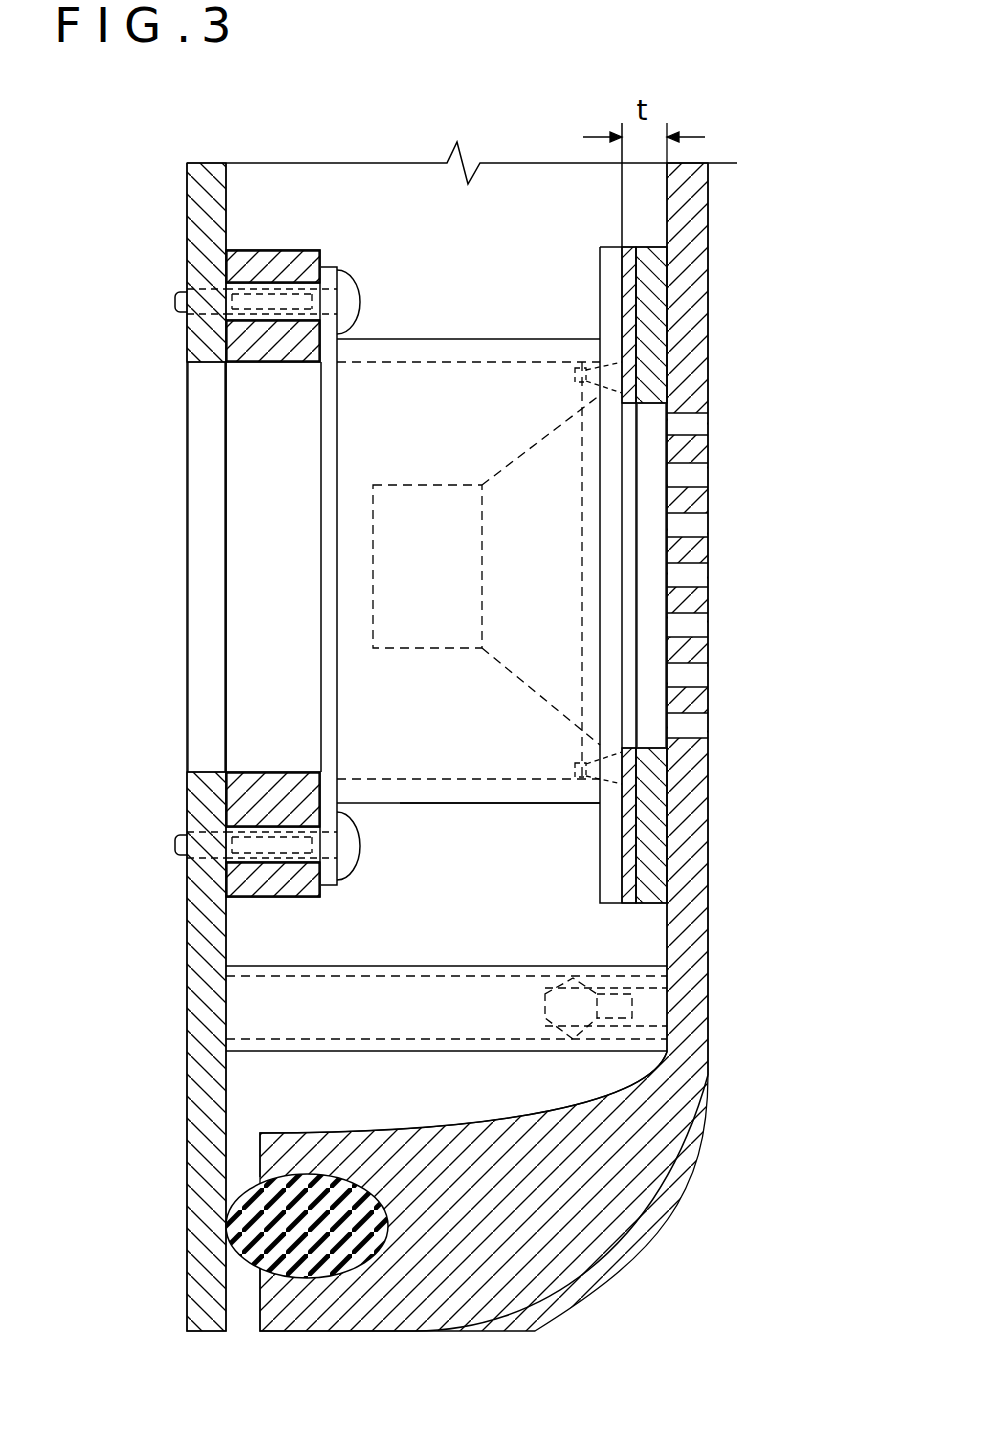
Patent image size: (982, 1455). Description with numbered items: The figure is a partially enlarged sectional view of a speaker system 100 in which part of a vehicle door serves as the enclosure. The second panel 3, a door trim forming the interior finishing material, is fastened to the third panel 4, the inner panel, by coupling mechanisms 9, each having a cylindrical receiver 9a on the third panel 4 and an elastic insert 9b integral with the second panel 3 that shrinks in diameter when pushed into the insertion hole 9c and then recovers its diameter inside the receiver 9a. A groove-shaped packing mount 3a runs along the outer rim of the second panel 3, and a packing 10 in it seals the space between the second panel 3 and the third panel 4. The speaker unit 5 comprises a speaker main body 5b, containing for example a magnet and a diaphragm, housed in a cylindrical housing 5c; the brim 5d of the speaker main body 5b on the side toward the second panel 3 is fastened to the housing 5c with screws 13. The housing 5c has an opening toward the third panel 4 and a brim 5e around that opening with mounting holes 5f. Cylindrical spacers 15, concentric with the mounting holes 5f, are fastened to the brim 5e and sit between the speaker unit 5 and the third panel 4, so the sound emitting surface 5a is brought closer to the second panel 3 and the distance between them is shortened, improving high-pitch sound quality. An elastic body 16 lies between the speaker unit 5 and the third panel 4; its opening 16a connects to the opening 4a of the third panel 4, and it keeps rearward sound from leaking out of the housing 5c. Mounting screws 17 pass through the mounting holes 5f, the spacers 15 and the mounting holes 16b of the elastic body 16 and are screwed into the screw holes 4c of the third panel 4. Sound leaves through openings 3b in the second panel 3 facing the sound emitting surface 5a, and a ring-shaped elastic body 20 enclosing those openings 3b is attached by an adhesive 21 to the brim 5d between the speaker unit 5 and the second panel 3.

The speaker system 100 is at (808, 169).
The second panel 3 is at (702, 213).
The packing mount 3a is at (365, 1258).
The openings 3b is at (702, 573).
The third panel 4 is at (187, 190).
The opening 4a is at (200, 499).
The screw holes 4c is at (185, 335).
The speaker unit 5 is at (425, 805).
The sound emitting surface 5a is at (538, 482).
The speaker main body 5b is at (447, 502).
The housing 5c is at (475, 805).
The brim 5d is at (610, 885).
The brim 5e is at (337, 705).
The mounting holes 5f is at (352, 282).
The coupling mechanisms 9 is at (372, 1052).
The receiver 9a is at (300, 1052).
The insert 9b is at (560, 1042).
The insertion hole 9c is at (600, 1042).
The packing 10 is at (235, 1218).
The screws 13 is at (580, 368).
The spacers 15 is at (283, 300).
The elastic body 16 is at (318, 250).
The opening 16a is at (260, 572).
The mounting holes 16b is at (262, 280).
The mounting screws 17 is at (178, 300).
The elastic body 20 is at (650, 893).
The adhesive 21 is at (630, 845).